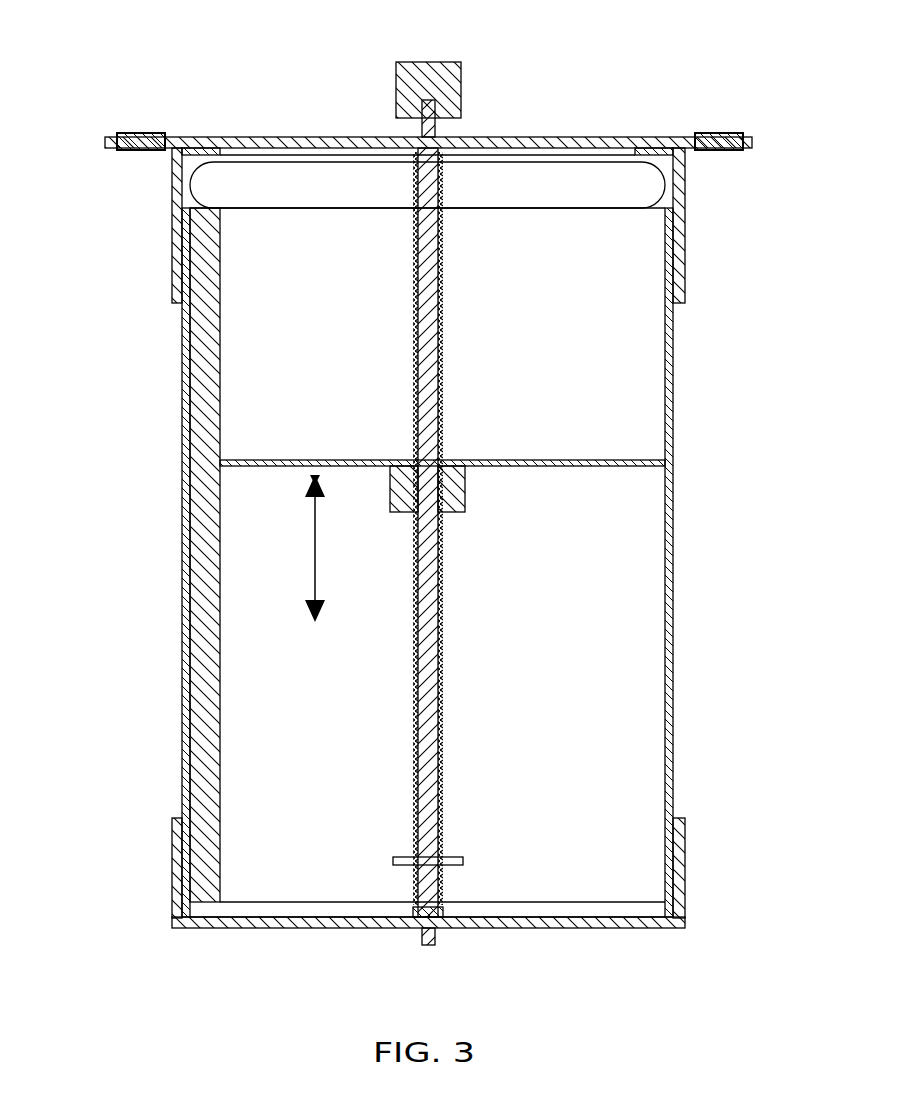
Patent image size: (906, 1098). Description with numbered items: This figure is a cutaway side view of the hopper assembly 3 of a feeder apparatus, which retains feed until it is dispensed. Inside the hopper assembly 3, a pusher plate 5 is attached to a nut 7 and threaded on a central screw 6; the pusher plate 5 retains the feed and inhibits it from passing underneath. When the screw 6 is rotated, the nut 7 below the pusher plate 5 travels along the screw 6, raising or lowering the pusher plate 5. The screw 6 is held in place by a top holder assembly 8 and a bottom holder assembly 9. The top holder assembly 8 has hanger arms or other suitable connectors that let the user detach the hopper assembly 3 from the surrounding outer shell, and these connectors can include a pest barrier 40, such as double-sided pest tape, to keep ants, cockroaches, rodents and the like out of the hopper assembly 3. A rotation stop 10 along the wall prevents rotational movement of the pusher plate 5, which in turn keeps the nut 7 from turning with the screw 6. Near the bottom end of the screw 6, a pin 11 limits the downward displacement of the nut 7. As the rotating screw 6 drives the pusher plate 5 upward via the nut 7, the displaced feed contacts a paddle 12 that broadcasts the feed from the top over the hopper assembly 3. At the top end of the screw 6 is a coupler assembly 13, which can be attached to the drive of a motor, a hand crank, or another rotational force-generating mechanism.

The hopper assembly 3 is at (170, 586).
The pusher plate 5 is at (538, 467).
The screw 6 is at (443, 343).
The nut 7 is at (452, 513).
The top holder assembly 8 is at (300, 136).
The bottom holder assembly 9 is at (240, 929).
The rotation stop 10 is at (222, 330).
The pin 11 is at (447, 857).
The paddle 12 is at (282, 175).
The coupler assembly 13 is at (395, 62).
The pest barrier 40 is at (138, 134).